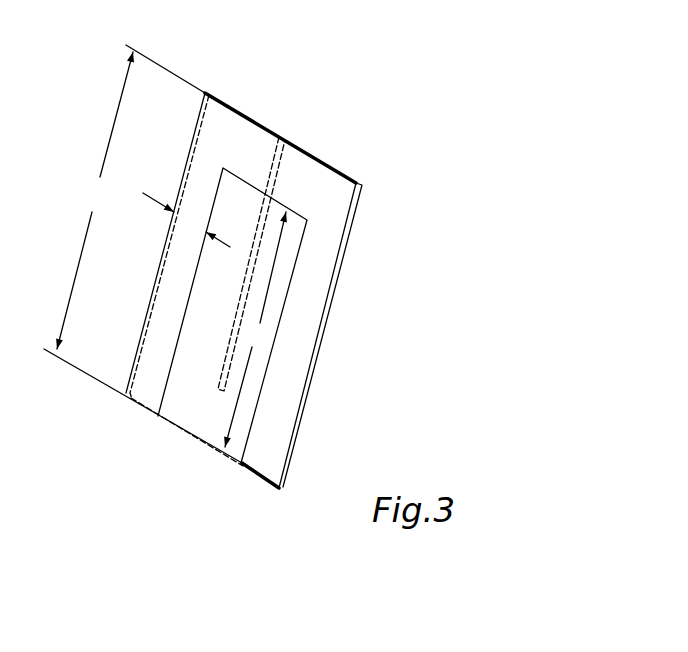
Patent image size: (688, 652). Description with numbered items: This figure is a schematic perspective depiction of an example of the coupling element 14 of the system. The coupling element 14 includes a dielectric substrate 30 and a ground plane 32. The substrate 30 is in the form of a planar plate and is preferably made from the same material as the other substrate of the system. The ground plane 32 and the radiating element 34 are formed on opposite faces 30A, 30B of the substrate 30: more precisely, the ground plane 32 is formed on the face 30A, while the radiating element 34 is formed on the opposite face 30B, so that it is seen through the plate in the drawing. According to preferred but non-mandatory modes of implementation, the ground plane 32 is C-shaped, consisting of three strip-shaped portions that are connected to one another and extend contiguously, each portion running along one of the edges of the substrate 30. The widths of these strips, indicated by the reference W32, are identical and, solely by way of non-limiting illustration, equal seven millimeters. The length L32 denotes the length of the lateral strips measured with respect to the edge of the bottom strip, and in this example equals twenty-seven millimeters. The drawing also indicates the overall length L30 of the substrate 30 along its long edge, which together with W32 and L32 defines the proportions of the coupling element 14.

The coupling element 14 is at (386, 81).
The dielectric substrate 30 is at (281, 490).
The face of the substrate 30A is at (210, 408).
The opposite face of the substrate 30B is at (366, 220).
The ground plane 32 is at (158, 385).
The radiating element 34 is at (273, 172).
The length of the substrate L30 is at (95, 200).
The width of the strips W32 is at (186, 223).
The length of the lateral strips L32 is at (255, 329).